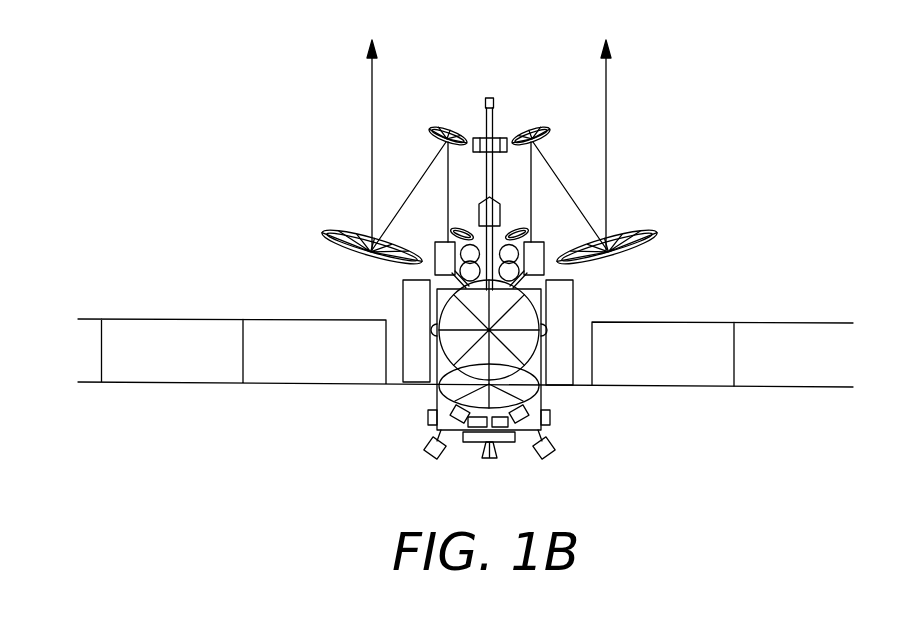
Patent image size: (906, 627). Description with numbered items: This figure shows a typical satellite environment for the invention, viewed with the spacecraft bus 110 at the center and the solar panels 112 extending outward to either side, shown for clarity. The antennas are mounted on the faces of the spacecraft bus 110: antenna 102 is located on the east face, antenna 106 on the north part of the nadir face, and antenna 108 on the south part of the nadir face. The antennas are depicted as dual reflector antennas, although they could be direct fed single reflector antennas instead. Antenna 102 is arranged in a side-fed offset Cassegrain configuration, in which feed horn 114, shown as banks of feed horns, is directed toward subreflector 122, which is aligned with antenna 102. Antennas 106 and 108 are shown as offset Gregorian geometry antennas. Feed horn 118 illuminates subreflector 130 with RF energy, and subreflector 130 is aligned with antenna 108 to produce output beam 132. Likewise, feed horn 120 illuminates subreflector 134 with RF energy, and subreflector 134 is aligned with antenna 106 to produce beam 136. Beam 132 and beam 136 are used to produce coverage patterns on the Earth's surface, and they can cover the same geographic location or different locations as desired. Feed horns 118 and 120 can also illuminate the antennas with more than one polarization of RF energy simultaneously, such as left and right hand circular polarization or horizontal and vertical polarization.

The antenna 102 is at (542, 388).
The antenna 106 is at (641, 247).
The antenna 108 is at (338, 247).
The spacecraft bus 110 is at (447, 383).
The solar panels 112 is at (284, 385).
The feed horn 114 is at (510, 253).
The feed horn 118 is at (434, 262).
The feed horn 120 is at (546, 262).
The subreflector 122 is at (438, 388).
The subreflector 130 is at (447, 122).
The subreflector 134 is at (532, 122).
The output beam 132 is at (372, 117).
The beam 136 is at (606, 117).